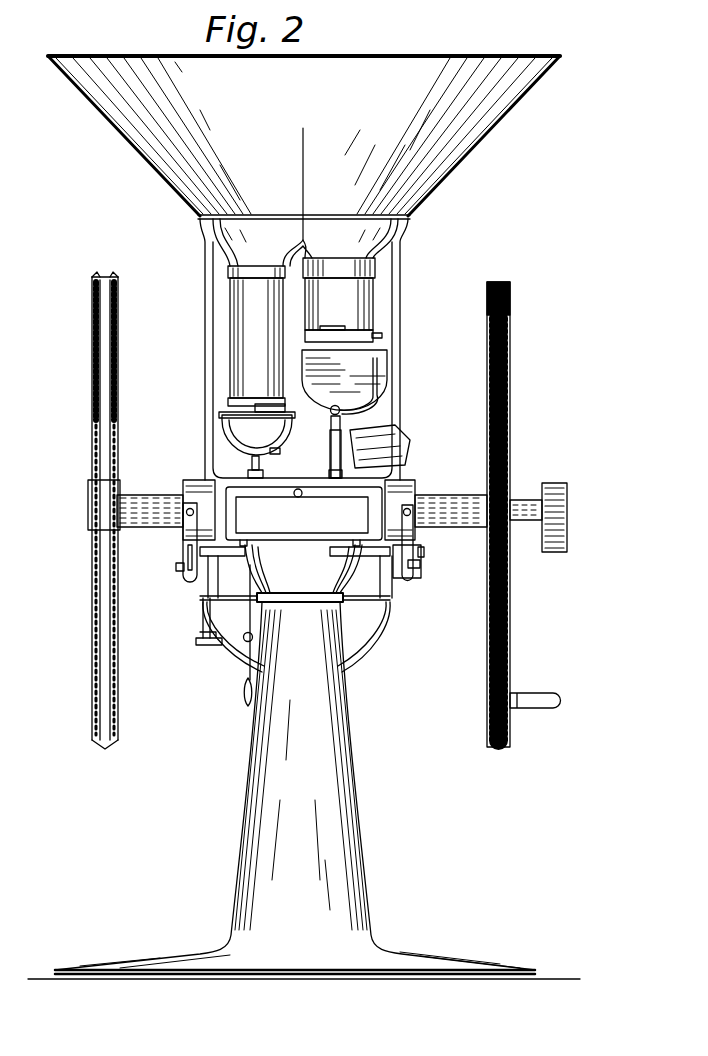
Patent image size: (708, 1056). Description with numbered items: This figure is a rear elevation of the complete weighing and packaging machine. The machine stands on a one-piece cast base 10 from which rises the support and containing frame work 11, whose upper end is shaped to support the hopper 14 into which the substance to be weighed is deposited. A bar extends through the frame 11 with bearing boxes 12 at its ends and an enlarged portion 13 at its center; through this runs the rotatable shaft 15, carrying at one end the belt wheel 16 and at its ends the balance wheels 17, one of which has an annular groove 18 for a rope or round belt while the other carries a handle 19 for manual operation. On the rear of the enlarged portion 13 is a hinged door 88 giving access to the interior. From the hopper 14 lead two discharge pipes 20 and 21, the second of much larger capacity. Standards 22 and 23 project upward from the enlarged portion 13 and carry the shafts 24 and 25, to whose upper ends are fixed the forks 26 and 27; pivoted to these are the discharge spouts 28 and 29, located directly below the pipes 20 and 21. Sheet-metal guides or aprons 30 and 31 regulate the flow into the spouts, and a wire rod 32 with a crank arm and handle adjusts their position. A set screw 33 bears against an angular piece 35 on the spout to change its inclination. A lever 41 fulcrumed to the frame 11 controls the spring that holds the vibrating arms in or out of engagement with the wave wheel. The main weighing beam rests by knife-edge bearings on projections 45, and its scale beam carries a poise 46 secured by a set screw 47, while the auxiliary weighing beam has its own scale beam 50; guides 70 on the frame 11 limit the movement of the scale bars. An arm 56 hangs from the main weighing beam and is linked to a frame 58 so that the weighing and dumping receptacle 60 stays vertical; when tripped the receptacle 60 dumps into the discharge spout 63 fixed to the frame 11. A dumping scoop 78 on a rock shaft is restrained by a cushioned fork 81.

The base 10 is at (304, 790).
The support and containing frame work 11 is at (395, 259).
The bearing boxes 12 is at (452, 495).
The enlarged portion 13 is at (395, 482).
The hopper 14 is at (304, 148).
The rotatable shaft 15 is at (518, 500).
The belt wheel 16 is at (560, 512).
The balance wheels 17 is at (487, 711).
The annular groove 18 is at (108, 277).
The handle 19 is at (536, 693).
The discharge pipe 20 is at (250, 331).
The discharge pipe 21 is at (360, 306).
The standard 22 is at (262, 476).
The standard 23 is at (333, 443).
The shaft 24 is at (252, 466).
The shaft 25 is at (331, 419).
The fork 26 is at (222, 437).
The fork 27 is at (380, 381).
The discharge spout 28 is at (257, 435).
The discharge spout 29 is at (344, 380).
The guide or apron 30 is at (240, 401).
The guide or apron 31 is at (382, 336).
The wire rod 32 is at (275, 406).
The set screw 33 is at (345, 412).
The angular piece 35 is at (280, 452).
The lever 41 is at (246, 666).
The projections 45 is at (415, 578).
The poise 46 is at (420, 566).
The set screw 47 is at (426, 556).
The scale beam 50 is at (176, 568).
The arm 56 is at (203, 621).
The frame 58 is at (196, 641).
The weighing and dumping receptacle 60 is at (295, 586).
The discharge spout 63 is at (364, 637).
The guides 70 is at (416, 543).
The dumping scoop 78 is at (410, 445).
The cushioned fork 81 is at (350, 472).
The hinged door 88 is at (304, 516).